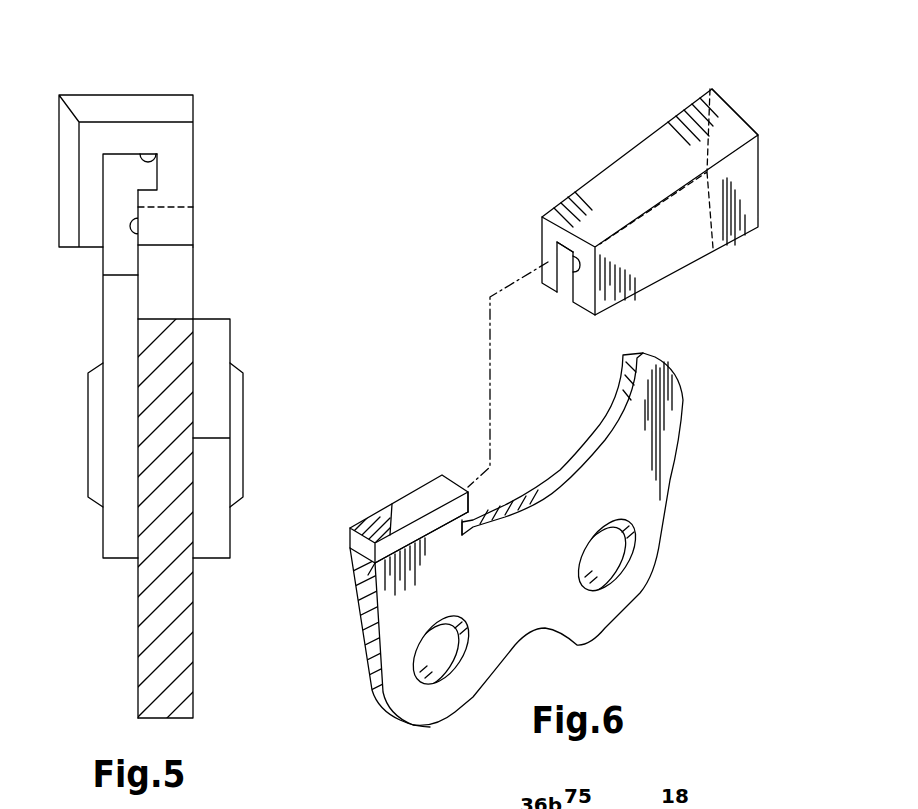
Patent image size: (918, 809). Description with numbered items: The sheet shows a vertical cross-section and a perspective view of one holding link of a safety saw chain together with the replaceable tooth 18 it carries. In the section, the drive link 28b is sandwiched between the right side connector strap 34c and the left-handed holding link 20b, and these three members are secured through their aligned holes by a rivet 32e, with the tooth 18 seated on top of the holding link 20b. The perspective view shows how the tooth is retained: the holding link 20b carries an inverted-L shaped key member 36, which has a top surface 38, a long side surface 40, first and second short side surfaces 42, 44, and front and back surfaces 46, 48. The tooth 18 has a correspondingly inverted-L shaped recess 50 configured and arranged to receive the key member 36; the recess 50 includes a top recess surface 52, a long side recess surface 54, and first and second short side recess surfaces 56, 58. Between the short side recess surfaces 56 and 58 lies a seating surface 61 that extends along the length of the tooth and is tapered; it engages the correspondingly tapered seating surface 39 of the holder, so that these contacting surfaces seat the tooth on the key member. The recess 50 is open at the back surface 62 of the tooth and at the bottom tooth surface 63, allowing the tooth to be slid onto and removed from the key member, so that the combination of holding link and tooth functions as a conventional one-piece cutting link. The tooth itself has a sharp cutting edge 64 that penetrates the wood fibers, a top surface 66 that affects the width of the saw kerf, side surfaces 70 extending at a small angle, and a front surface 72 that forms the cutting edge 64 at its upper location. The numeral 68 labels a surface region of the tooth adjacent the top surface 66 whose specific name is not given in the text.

In FIG. 5, the replaceable tooth 18 is at (150, 105).
In FIG. 6, the replaceable tooth 18 is at (635, 167).
In FIG. 5, the left-handed holding link 20b is at (118, 330).
In FIG. 6, the left-handed holding link 20b is at (632, 495).
In FIG. 5, the drive link 28b is at (153, 633).
In FIG. 5, the rivet 32e is at (97, 425).
In FIG. 5, the right side connector strap 34c is at (213, 345).
In FIG. 6, the key member 36 is at (413, 507).
In FIG. 6, the top surface 38 is at (393, 520).
In FIG. 5, the seating surface 39 is at (150, 192).
In FIG. 6, the seating surface 39 is at (373, 587).
In FIG. 6, the long side surface 40 is at (350, 550).
In FIG. 6, the first short side surface 42 is at (433, 527).
In FIG. 6, the second short side surface 44 is at (370, 592).
In FIG. 6, the front surface 46 is at (460, 488).
In FIG. 6, the back surface 48 is at (352, 568).
In FIG. 6, the recess 50 is at (527, 258).
In FIG. 6, the top recess surface 52 is at (540, 245).
In FIG. 6, the long side recess surface 54 is at (563, 268).
In FIG. 5, the first short side recess surface 56 is at (142, 150).
In FIG. 6, the first short side recess surface 56 is at (576, 292).
In FIG. 5, the second short side recess surface 58 is at (143, 213).
In FIG. 6, the second short side recess surface 58 is at (571, 300).
In FIG. 5, the seating surface 61 is at (148, 187).
In FIG. 6, the seating surface 61 is at (573, 252).
In FIG. 6, the back surface of the tooth 62 is at (615, 263).
In FIG. 6, the bottom tooth surface 63 is at (697, 235).
In FIG. 6, the cutting edge 64 is at (732, 137).
In FIG. 6, the top surface of the tooth 66 is at (678, 147).
In FIG. 6, the top surface front portion 68 is at (580, 185).
In FIG. 6, the side surfaces 70 is at (705, 213).
In FIG. 6, the front surface of the tooth 72 is at (732, 138).